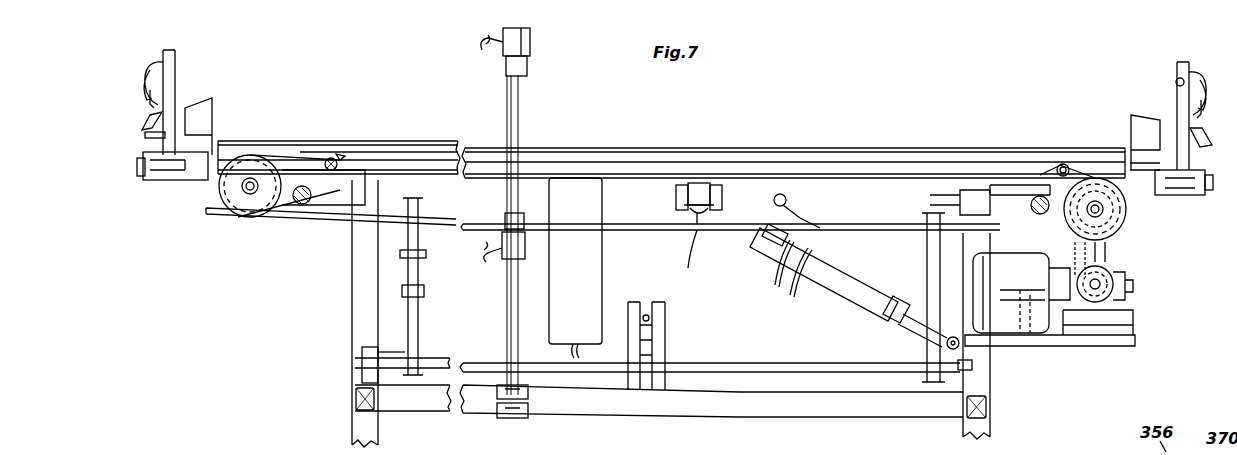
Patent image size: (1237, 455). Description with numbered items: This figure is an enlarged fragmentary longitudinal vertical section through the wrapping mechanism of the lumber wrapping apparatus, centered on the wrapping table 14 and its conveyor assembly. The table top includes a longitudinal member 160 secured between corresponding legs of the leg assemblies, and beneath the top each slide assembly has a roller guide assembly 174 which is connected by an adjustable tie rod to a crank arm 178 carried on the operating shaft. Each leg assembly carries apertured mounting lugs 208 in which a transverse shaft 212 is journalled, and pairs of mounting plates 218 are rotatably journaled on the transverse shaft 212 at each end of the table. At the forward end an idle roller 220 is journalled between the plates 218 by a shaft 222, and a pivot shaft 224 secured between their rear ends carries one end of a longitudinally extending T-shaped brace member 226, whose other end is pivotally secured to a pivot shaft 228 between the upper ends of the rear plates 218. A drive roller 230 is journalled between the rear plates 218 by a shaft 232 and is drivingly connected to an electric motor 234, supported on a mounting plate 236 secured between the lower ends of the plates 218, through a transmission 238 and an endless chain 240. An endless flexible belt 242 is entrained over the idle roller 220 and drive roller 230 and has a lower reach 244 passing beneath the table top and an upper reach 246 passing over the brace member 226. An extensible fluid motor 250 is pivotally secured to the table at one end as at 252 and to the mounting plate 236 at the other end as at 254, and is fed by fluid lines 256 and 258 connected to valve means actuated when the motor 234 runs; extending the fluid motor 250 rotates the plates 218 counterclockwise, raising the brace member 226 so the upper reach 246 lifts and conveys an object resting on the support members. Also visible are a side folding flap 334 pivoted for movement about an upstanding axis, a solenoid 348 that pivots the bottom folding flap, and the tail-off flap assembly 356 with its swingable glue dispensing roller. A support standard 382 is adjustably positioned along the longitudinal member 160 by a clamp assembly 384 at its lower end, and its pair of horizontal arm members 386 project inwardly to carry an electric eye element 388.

The wrapping table 14 is at (724, 137).
The longitudinal member 160 is at (720, 400).
The roller guide assembly 174 is at (916, 210).
The crank arm 178 is at (927, 251).
The apertured mounting lug 208 is at (337, 200).
The transverse shaft 212 is at (303, 205).
The mounting plates 218 is at (289, 202).
The idle roller 220 is at (229, 210).
The shaft 222 is at (243, 188).
The pivot shaft 224 is at (327, 168).
The brace member 226 is at (398, 168).
The pivot shaft 228 is at (1065, 166).
The drive roller 230 is at (1121, 233).
The shaft 232 is at (1103, 212).
The electric motor 234 is at (1012, 312).
The mounting plate 236 is at (1018, 336).
The transmission 238 is at (1126, 291).
The endless chain 240 is at (1110, 260).
The endless flexible belt 242 is at (740, 232).
The lower reach 244 is at (639, 233).
The upper reach 246 is at (288, 156).
The extensible fluid motor 250 is at (845, 302).
The pivot connection 252 is at (788, 200).
The pivot connection 254 is at (946, 344).
The fluid line 256 is at (812, 272).
The fluid line 258 is at (778, 266).
The side folding flap 334 is at (198, 107).
The solenoid 348 is at (164, 174).
The tail-off flap assembly 356 is at (185, 43).
The support standard 382 is at (518, 133).
The clamp assembly 384 is at (522, 415).
The horizontal arm members 386 is at (527, 60).
The electric eye element 388 is at (530, 46).